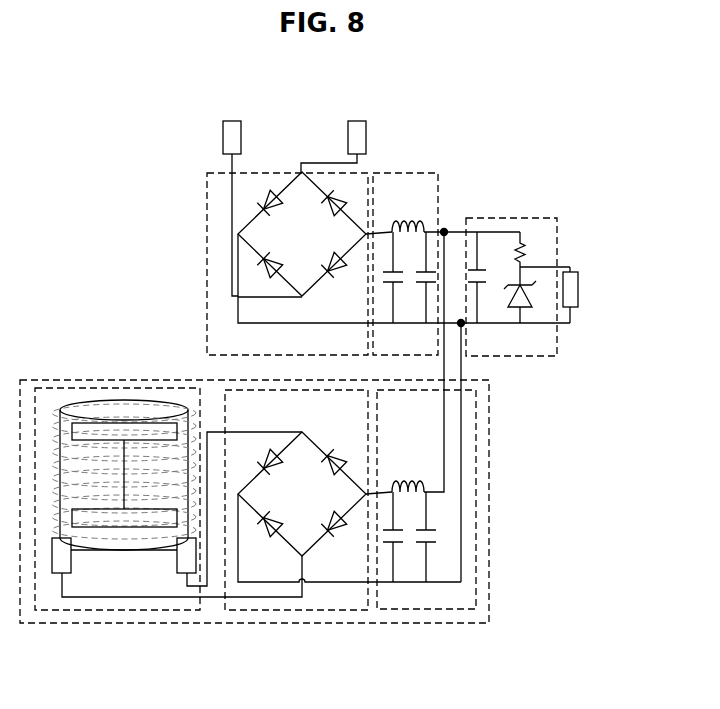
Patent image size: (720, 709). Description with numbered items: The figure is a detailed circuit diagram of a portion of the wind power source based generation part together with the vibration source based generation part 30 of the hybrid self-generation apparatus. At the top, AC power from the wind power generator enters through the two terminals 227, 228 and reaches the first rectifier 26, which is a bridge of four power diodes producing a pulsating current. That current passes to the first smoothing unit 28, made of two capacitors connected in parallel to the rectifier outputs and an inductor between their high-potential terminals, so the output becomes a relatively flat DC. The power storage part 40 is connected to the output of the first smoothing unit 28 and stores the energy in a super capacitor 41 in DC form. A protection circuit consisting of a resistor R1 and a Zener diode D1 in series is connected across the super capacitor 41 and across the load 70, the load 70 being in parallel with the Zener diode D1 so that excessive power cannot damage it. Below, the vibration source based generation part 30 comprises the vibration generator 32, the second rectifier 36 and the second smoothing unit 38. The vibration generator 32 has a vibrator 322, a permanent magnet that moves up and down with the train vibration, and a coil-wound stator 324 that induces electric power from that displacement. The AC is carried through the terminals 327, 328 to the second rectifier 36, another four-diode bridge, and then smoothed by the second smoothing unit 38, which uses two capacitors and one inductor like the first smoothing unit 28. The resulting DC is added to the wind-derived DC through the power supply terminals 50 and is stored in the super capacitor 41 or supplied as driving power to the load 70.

The terminal 227 is at (232, 120).
The terminal 228 is at (357, 120).
The first rectifier 26 is at (266, 172).
The first smoothing unit 28 is at (403, 172).
The power supply terminals 50 is at (445, 230).
The power storage part 40 is at (518, 263).
The super capacitor 41 is at (479, 268).
The resistor R1 is at (534, 249).
The Zener diode D1 is at (509, 295).
The load 70 is at (580, 286).
The vibration source based generation part 30 is at (489, 503).
The vibration generator 32 is at (115, 505).
The vibrator 322 is at (100, 427).
The stator 324 is at (135, 552).
The terminal 327 is at (52, 575).
The terminal 328 is at (177, 575).
The second rectifier 36 is at (300, 611).
The second smoothing unit 38 is at (429, 610).